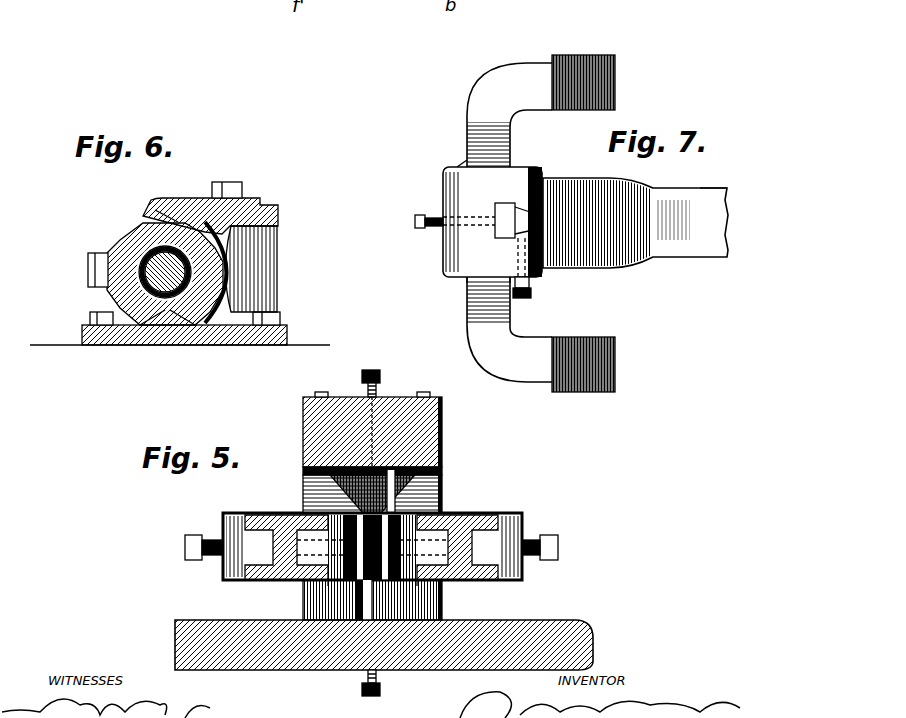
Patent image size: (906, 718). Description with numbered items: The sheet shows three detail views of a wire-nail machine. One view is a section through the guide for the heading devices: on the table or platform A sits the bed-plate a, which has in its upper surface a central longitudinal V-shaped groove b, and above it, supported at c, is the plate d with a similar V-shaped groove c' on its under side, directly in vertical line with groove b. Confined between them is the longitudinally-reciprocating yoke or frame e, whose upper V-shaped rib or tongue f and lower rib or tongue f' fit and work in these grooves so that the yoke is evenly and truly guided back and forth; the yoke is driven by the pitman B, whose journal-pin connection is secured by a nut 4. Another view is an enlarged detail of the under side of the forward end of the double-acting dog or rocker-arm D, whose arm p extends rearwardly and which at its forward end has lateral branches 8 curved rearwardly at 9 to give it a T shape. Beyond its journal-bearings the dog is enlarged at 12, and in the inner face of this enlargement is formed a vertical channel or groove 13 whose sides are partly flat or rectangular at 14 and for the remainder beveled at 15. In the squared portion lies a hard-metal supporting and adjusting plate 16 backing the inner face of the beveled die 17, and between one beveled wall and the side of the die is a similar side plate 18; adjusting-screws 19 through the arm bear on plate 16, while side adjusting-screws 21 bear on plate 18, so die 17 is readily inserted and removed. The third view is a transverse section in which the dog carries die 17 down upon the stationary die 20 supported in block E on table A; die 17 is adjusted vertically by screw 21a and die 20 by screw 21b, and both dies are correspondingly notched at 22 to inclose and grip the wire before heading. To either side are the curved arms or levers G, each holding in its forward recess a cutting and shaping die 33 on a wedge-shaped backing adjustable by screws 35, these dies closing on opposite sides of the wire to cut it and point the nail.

In FIG. 6, the bed-plate a is at (287, 330).
In FIG. 6, the pitman B is at (135, 282).
In FIG. 6, the central longitudinal groove b is at (152, 326).
In FIG. 6, the support for plate c is at (266, 269).
In FIG. 6, the central longitudinal V-shaped groove c' is at (158, 237).
In FIG. 6, the plate d is at (258, 204).
In FIG. 6, the longitudinally-reciprocating yoke or frame e is at (125, 236).
In FIG. 6, the V-shaped rib or tongue f is at (174, 191).
In FIG. 6, the V-shaped rib or tongue f' is at (191, 350).
In FIG. 6, the nut 4 is at (98, 274).
In FIG. 7, the branches 8 is at (545, 78).
In FIG. 7, the rearwardly curved portions of branches 9 is at (493, 108).
In FIG. 7, the enlarged portion 12 is at (460, 197).
In FIG. 5, the enlarged portion 12 is at (440, 457).
In FIG. 7, the vertical channel or groove 13 is at (495, 228).
In FIG. 7, the flat or rectangular side portions 14 is at (503, 203).
In FIG. 7, the beveled or tapered side portions 15 is at (523, 208).
In FIG. 7, the supporting and adjusting plate 16 is at (478, 283).
In FIG. 7, the die 17 is at (548, 230).
In FIG. 5, the die 17 is at (303, 471).
In FIG. 7, the side supporting and adjusting plate 18 is at (545, 258).
In FIG. 5, the side supporting and adjusting plate 18 is at (442, 479).
In FIG. 7, the adjusting-screws 19 is at (415, 222).
In FIG. 5, the die 20 is at (375, 605).
In FIG. 7, the adjusting-screws 21 is at (522, 298).
In FIG. 5, the adjusting-screw 21a is at (380, 376).
In FIG. 5, the adjusting-screw 21b is at (366, 690).
In FIG. 5, the notches 22 is at (385, 507).
In FIG. 5, the cutting and shaping die 33 is at (327, 582).
In FIG. 5, the screws 35 is at (185, 547).
In FIG. 5, the table or platform A is at (570, 625).
In FIG. 7, the double-acting dog or rocker-arm D is at (632, 247).
In FIG. 5, the double-acting dog or rocker-arm D is at (430, 420).
In FIG. 5, the stationary block E is at (325, 608).
In FIG. 5, the curved arms or levers G is at (292, 513).
In FIG. 7, the arm p is at (712, 197).